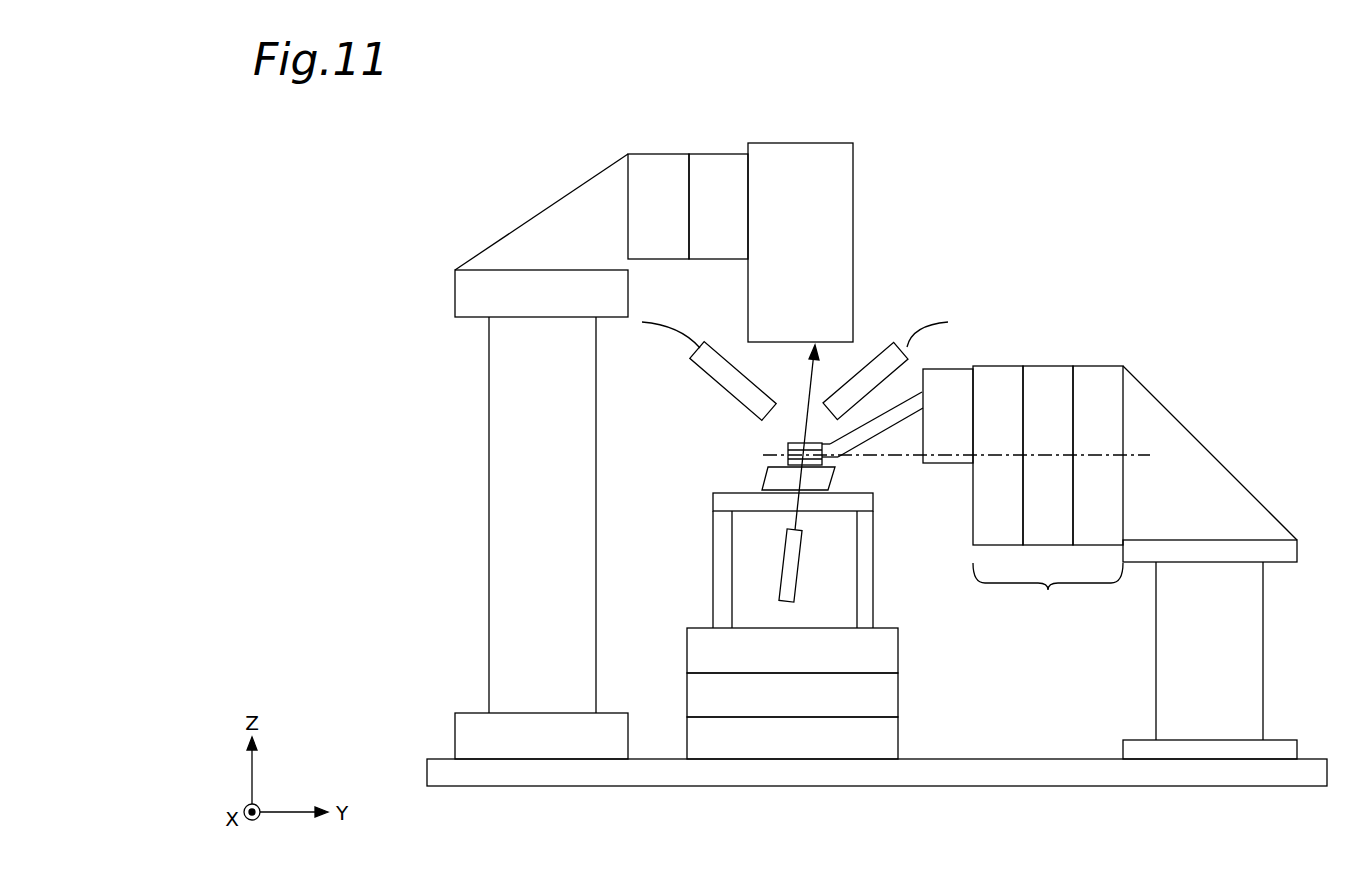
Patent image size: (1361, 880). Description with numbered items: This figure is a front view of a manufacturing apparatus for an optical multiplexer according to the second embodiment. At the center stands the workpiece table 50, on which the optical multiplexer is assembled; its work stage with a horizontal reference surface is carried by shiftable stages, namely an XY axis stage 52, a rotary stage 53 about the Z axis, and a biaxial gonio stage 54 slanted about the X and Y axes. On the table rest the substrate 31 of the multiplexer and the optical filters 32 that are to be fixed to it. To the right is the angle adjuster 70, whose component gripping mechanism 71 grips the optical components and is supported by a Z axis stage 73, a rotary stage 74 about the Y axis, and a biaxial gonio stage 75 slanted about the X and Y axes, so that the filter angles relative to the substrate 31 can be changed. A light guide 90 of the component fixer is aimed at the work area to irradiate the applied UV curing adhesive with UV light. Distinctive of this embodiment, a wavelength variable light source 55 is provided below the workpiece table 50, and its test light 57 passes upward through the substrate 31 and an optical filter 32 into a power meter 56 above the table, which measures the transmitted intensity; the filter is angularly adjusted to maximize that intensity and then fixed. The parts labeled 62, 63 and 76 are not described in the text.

The substrate 31 is at (775, 480).
The optical filters 32 is at (788, 447).
The workpiece table 50 is at (724, 500).
The XY axis stage 52 is at (792, 738).
The rotary stage 53 is at (792, 695).
The biaxial gonio stage 54 is at (792, 650).
The wavelength variable light source 55 is at (783, 565).
The power meter 56 is at (832, 197).
The test light 57 is at (812, 397).
The support member 62 is at (715, 153).
The support member 63 is at (658, 153).
The angle adjuster 70 is at (1110, 521).
The component gripping mechanism 71 is at (948, 465).
The Z axis stage 73 is at (1097, 365).
The rotary stage 74 is at (1047, 365).
The biaxial gonio stage 75 is at (997, 365).
The drive mechanism 76 is at (1048, 591).
The light guide 90 is at (728, 377).